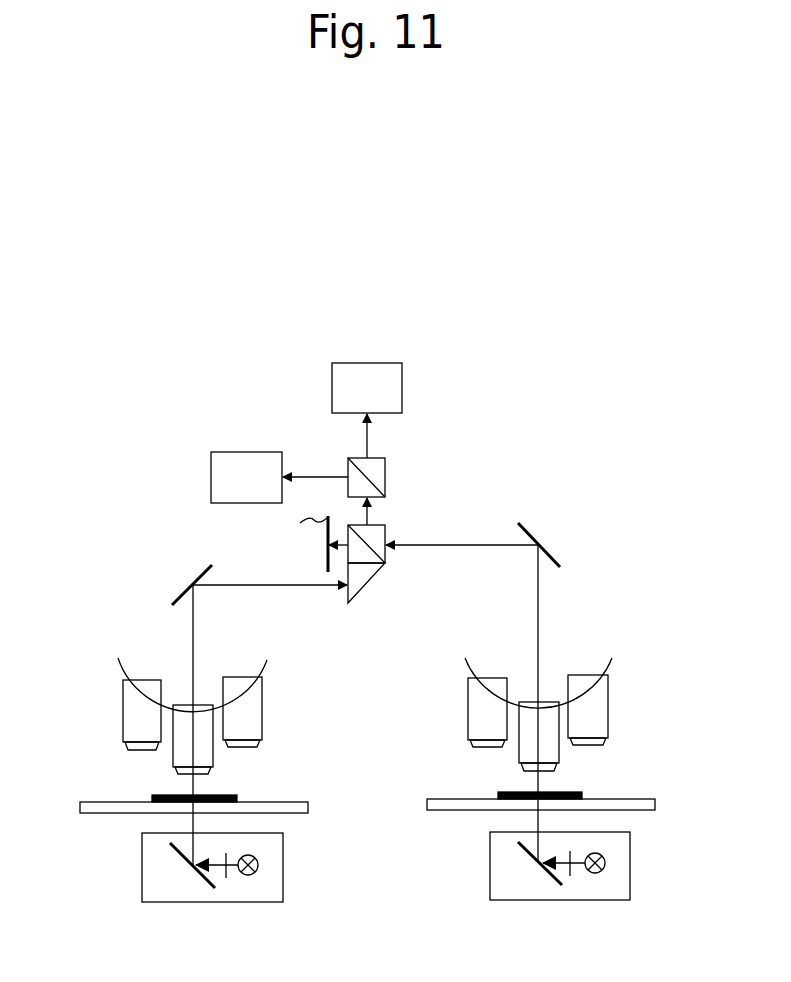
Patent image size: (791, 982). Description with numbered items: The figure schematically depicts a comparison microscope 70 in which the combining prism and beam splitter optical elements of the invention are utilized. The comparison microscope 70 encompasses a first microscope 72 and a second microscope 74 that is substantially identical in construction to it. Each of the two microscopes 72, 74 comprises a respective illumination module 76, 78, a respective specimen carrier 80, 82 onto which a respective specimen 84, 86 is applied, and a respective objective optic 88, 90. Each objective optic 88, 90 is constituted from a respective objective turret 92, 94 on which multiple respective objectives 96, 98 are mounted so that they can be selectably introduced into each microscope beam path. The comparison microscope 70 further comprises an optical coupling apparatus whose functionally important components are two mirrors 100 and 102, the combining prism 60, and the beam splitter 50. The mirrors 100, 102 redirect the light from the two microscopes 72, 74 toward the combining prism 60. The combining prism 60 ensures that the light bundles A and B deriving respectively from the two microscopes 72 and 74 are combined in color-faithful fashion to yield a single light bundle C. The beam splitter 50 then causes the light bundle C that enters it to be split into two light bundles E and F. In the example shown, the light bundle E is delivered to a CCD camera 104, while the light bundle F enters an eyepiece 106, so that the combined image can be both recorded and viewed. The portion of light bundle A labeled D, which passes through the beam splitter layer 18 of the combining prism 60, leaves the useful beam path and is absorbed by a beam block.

The comparison microscope 70 is at (495, 257).
The first microscope 72 is at (85, 563).
The second microscope 74 is at (668, 528).
The beam splitter layer 18 is at (370, 543).
The beam splitter 50 is at (386, 460).
The combining prism 60 is at (357, 595).
The illumination module 76 is at (258, 892).
The illumination module 78 is at (613, 890).
The specimen carrier 80 is at (308, 805).
The specimen carrier 82 is at (655, 802).
The specimen 84 is at (228, 795).
The specimen 86 is at (575, 790).
The objective optic 88 is at (200, 718).
The objective optic 90 is at (552, 701).
The objective turret 92 is at (122, 668).
The objective turret 94 is at (470, 663).
The objectives 96 is at (180, 745).
The objectives 98 is at (527, 748).
The mirror 100 is at (200, 577).
The mirror 102 is at (555, 555).
The CCD camera 104 is at (239, 452).
The eyepiece 106 is at (402, 386).
The light bundle A is at (445, 540).
The light bundle B is at (275, 585).
The light bundle C is at (370, 513).
The portion of light bundle A D is at (346, 545).
The light bundle E is at (327, 475).
The light bundle F is at (370, 440).